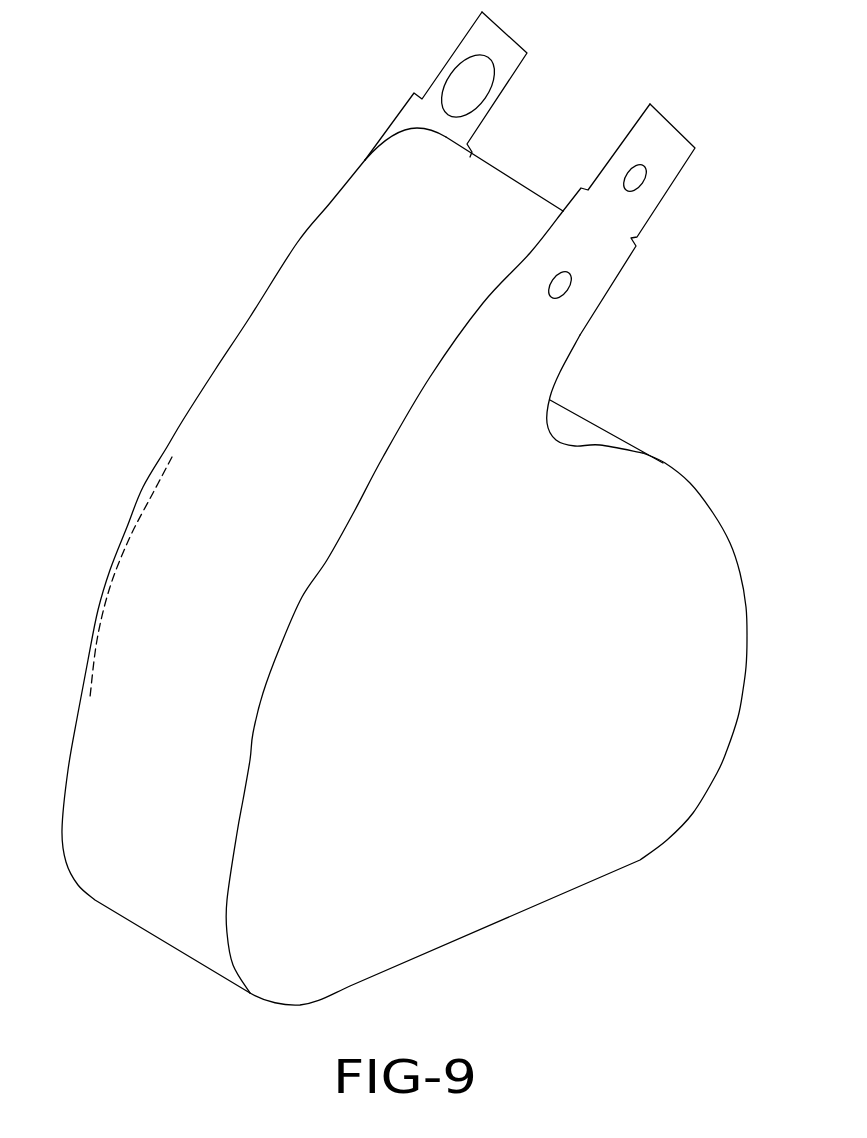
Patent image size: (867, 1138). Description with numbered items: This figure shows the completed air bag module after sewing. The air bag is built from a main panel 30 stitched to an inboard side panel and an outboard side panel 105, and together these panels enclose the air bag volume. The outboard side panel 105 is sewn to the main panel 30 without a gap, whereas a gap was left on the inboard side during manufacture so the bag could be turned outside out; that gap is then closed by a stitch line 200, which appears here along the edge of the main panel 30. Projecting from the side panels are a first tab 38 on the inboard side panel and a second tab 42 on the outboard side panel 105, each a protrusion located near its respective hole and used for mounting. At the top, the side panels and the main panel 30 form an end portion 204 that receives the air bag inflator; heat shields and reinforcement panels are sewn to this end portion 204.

The main panel 30 is at (193, 697).
The first tab 38 is at (498, 45).
The second tab 42 is at (663, 140).
The outboard side panel 105 is at (525, 712).
The stitch line 200 is at (98, 610).
The end portion 204 is at (347, 136).